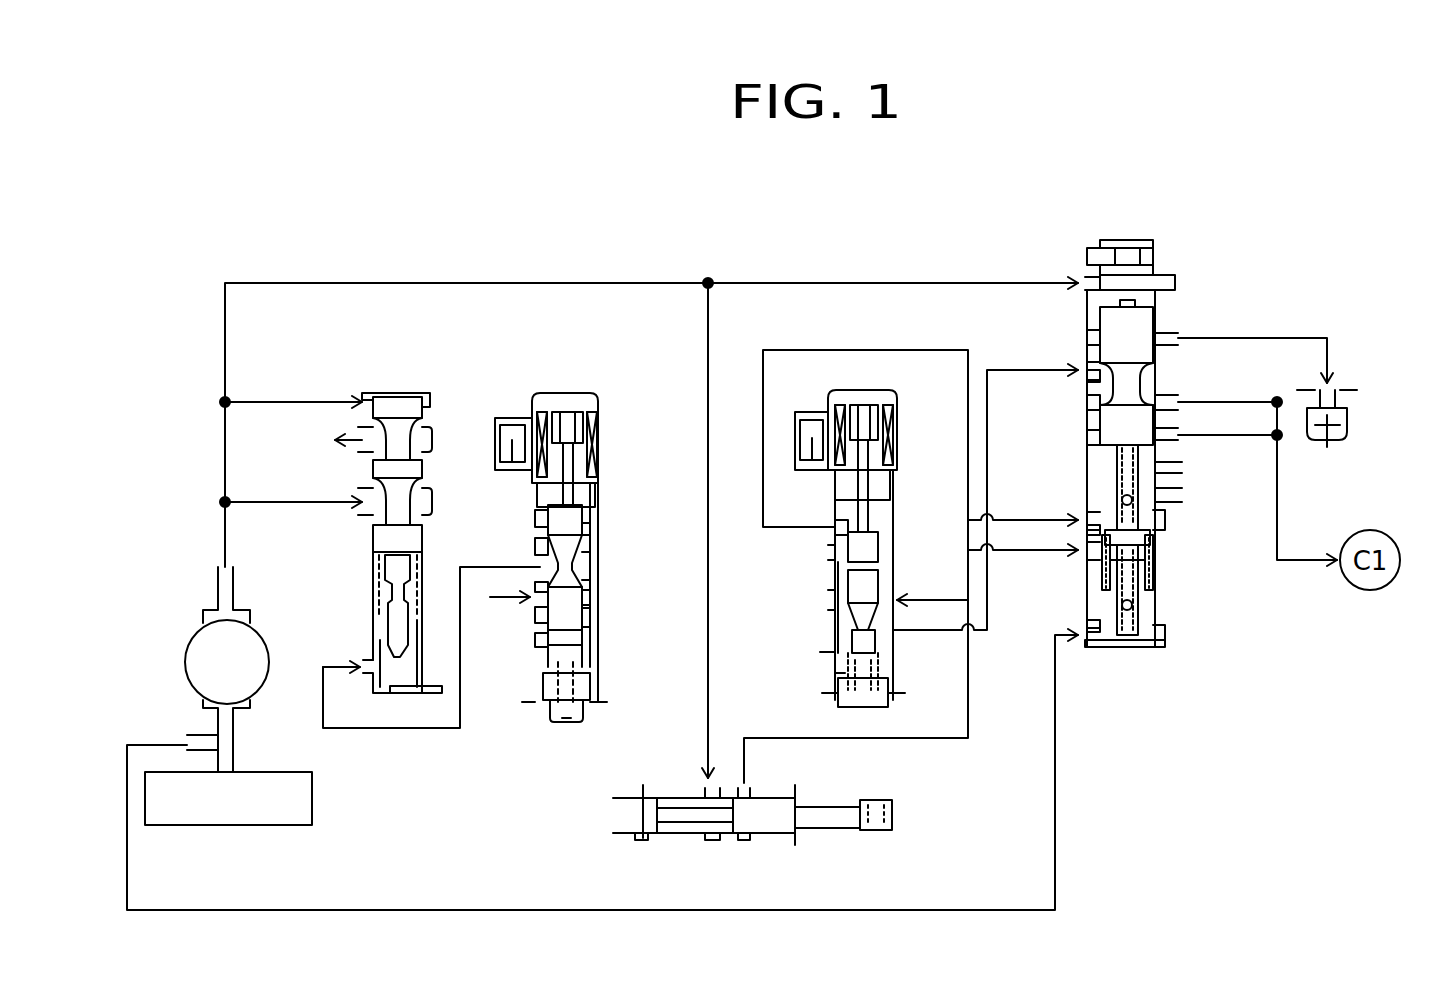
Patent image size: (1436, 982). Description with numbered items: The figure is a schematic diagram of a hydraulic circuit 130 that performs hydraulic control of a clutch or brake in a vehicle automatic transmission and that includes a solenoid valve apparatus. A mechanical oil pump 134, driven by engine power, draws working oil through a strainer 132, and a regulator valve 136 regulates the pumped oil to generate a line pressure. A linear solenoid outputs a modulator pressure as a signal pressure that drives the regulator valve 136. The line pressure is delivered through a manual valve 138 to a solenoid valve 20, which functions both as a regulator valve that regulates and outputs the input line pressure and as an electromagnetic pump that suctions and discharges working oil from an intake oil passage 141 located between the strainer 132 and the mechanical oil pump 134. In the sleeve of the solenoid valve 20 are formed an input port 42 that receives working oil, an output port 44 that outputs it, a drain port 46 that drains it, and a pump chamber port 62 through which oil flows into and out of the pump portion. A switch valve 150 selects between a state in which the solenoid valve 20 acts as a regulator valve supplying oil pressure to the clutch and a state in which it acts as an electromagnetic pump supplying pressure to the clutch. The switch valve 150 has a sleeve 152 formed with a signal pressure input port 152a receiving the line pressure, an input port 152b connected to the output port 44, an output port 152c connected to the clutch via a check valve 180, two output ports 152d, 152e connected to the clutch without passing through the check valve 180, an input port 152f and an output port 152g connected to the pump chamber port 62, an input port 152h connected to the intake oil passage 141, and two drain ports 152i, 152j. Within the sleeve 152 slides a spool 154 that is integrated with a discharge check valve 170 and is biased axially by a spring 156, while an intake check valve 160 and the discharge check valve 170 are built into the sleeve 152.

The hydraulic circuit 130 is at (314, 250).
The strainer 132 is at (313, 800).
The mechanical oil pump 134 is at (204, 628).
The regulator valve 136 is at (428, 397).
The manual valve 138 is at (822, 845).
The intake oil passage 141 is at (160, 745).
The solenoid valve 20 is at (924, 538).
The input port 42 is at (898, 588).
The output port 44 is at (898, 624).
The drain port 46 is at (838, 648).
The pump chamber port 62 is at (838, 518).
The switch valve 150 is at (1152, 425).
The sleeve 152 is at (1108, 241).
The signal pressure input port 152a is at (1085, 281).
The input port 152b is at (1086, 365).
The output port 152c is at (1178, 333).
The output port 152d is at (1178, 395).
The output port 152e is at (1165, 429).
The input port 152f is at (1097, 512).
The output port 152g is at (1097, 548).
The input port 152h is at (1097, 630).
The drain port 152i is at (1168, 462).
The drain port 152j is at (1168, 502).
The spool 154 is at (1148, 308).
The spring 156 is at (1160, 573).
The intake check valve 160 is at (1160, 606).
The discharge check valve 170 is at (1160, 533).
The check valve 180 is at (1350, 390).